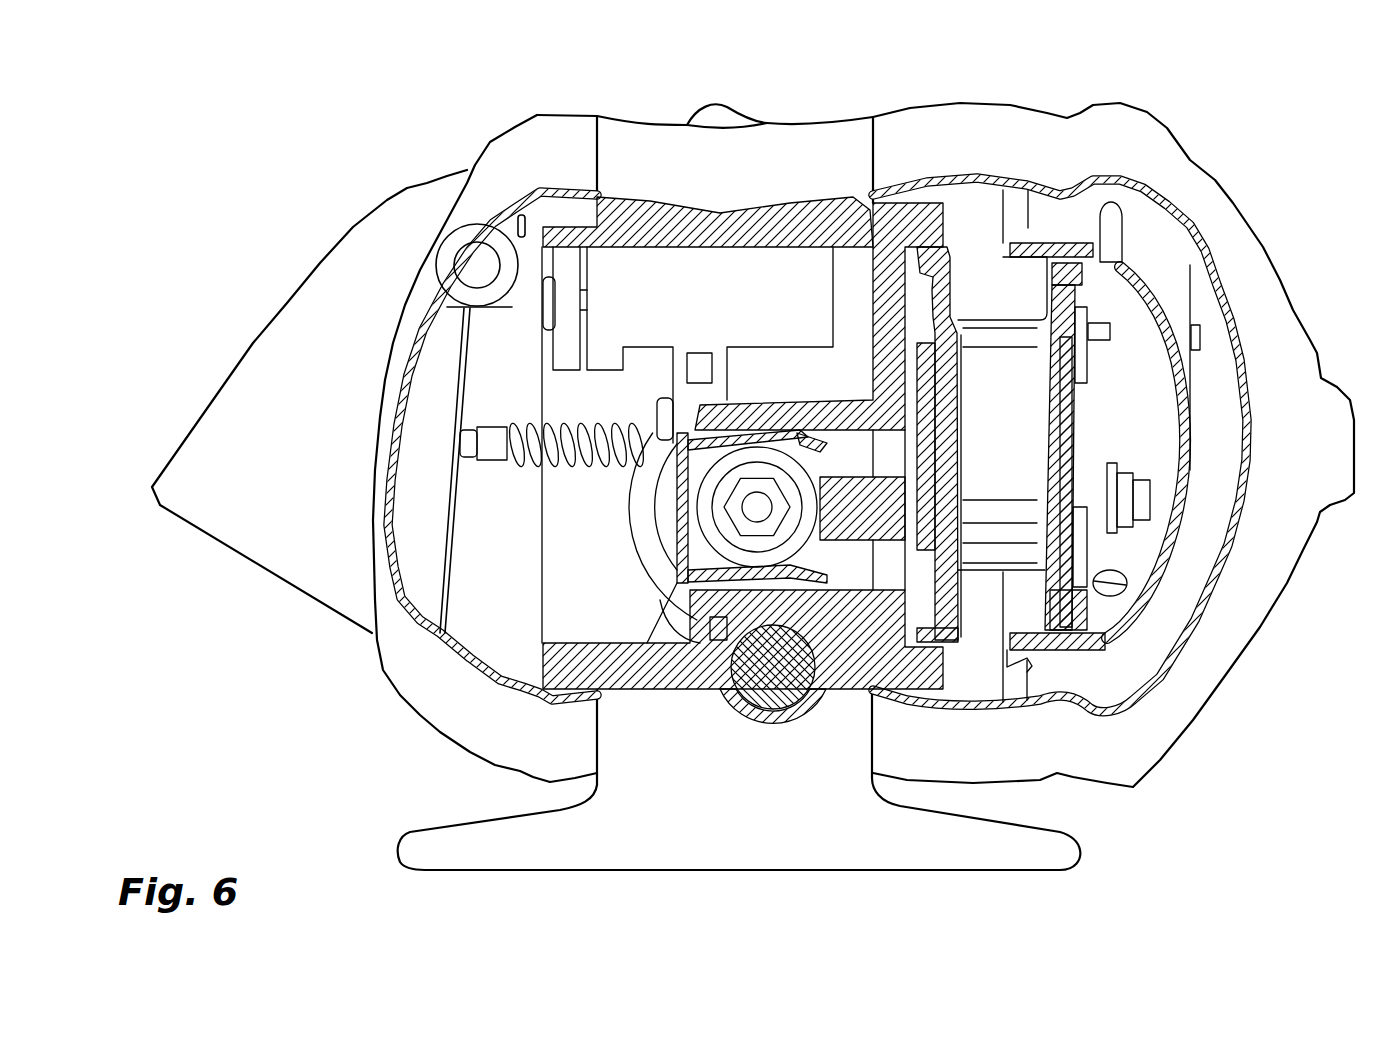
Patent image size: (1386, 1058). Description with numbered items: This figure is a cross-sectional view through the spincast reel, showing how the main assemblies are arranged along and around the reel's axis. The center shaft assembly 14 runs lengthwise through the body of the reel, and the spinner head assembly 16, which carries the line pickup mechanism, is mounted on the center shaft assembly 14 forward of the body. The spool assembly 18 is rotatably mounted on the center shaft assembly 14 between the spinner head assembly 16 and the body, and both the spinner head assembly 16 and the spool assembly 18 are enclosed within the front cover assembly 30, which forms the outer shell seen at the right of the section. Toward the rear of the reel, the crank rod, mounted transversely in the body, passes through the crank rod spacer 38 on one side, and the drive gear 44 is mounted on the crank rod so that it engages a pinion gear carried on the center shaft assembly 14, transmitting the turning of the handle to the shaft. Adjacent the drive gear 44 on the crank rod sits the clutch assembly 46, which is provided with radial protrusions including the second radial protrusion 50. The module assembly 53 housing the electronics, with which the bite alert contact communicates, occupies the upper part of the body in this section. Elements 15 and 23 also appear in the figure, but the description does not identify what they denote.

The center shaft assembly 14 is at (563, 430).
The frame 15 is at (763, 547).
The spinner head assembly 16 is at (1158, 240).
The spool assembly 18 is at (983, 343).
The mounting bracket 23 is at (677, 470).
The front cover assembly 30 is at (1250, 257).
The crank rod spacer 38 is at (750, 508).
The drive gear 44 is at (747, 530).
The clutch assembly 46 is at (657, 508).
The second radial protrusion 50 is at (660, 630).
The module assembly 53 is at (668, 278).